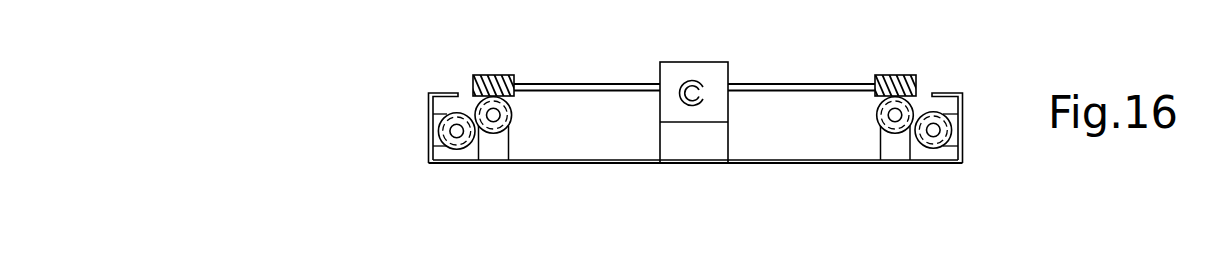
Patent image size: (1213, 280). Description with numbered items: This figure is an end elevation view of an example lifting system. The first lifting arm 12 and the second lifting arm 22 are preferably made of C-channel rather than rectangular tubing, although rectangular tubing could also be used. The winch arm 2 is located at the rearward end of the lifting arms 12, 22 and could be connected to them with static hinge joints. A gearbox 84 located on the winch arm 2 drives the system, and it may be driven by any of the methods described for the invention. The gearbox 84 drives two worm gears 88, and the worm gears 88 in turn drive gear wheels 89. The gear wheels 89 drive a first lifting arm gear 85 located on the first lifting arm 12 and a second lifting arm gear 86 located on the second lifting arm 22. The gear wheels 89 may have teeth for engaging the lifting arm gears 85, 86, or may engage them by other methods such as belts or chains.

The winch arm 2 is at (797, 165).
The first lifting arm 12 is at (446, 93).
The second lifting arm 22 is at (953, 93).
The gearbox 84 is at (712, 62).
The first lifting arm gear 85 is at (470, 148).
The second lifting arm gear 86 is at (918, 147).
The worm gear 88 is at (510, 75).
The gear wheel 89 is at (511, 106).